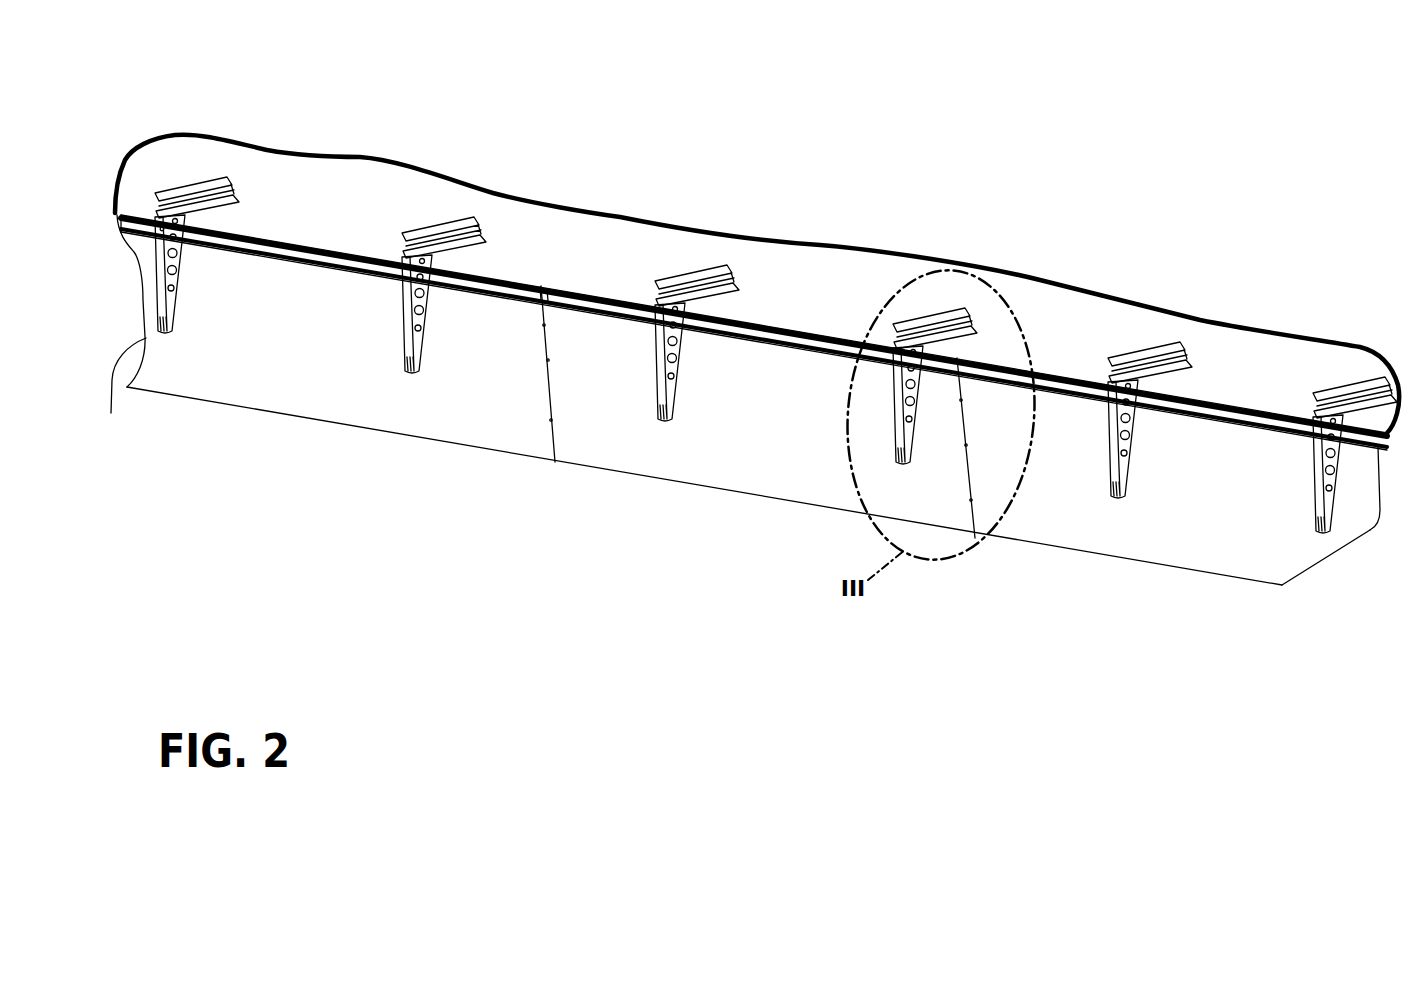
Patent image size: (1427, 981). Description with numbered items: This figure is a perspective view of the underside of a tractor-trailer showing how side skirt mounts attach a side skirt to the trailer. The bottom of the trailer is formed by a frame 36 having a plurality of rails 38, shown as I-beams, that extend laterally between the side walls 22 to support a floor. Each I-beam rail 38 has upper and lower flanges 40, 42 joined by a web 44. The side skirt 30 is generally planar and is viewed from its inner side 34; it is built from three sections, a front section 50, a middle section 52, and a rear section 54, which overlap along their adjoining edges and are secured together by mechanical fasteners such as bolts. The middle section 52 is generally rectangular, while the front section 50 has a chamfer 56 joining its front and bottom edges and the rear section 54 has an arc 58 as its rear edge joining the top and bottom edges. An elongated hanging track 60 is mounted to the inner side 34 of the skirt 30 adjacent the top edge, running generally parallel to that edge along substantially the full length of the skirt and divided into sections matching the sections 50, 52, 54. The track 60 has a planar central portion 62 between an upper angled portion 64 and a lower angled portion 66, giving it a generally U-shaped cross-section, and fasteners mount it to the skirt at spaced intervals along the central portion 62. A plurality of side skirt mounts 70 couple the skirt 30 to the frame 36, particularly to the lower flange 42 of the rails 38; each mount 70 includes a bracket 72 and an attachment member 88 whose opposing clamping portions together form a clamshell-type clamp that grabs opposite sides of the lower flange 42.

The side wall 22 is at (813, 263).
The side skirt 30 is at (668, 485).
The inner side 34 is at (310, 373).
The frame 36 is at (235, 135).
The rail 38 is at (245, 183).
The upper flange 40 is at (182, 127).
The lower flange 42 is at (246, 161).
The web 44 is at (207, 129).
The front section 50 is at (1213, 527).
The middle section 52 is at (792, 450).
The rear section 54 is at (386, 400).
The chamfer 56 is at (1320, 563).
The arc 58 is at (123, 391).
The hanging track 60 is at (754, 320).
The central portion 62 is at (613, 273).
The upper angled portion 64 is at (587, 288).
The lower angled portion 66 is at (593, 305).
The side skirt mount 70 is at (735, 375).
The bracket 72 is at (129, 271).
The attachment member 88 is at (146, 162).